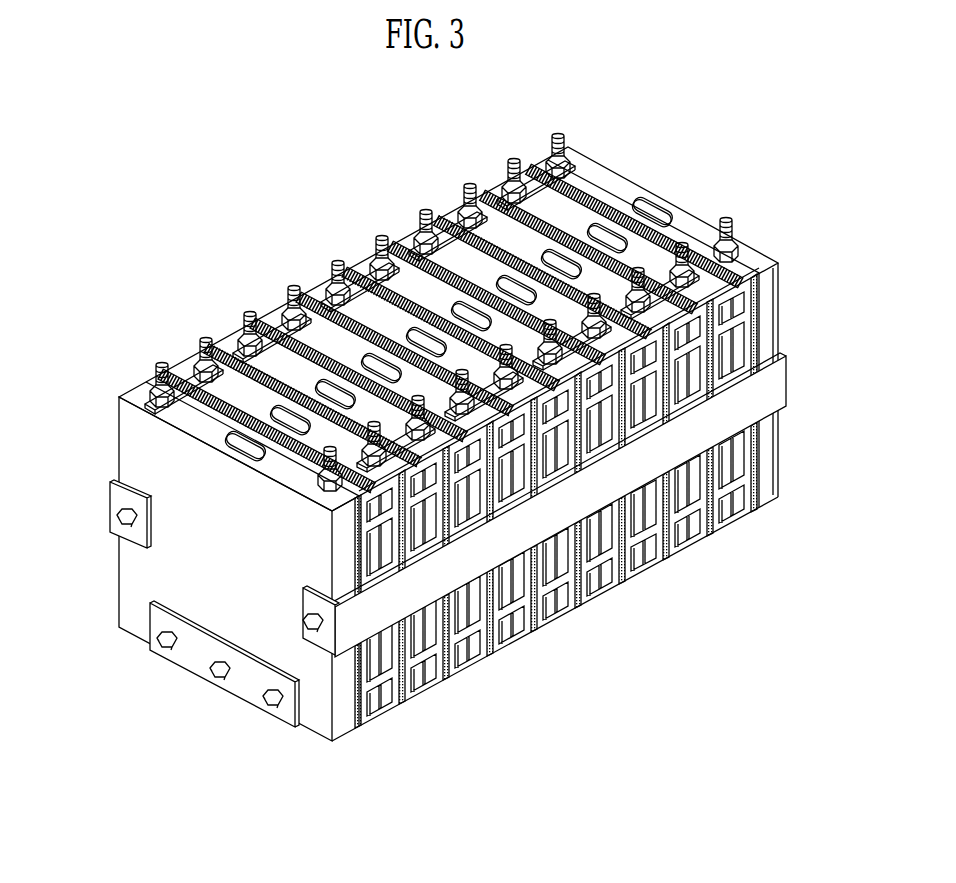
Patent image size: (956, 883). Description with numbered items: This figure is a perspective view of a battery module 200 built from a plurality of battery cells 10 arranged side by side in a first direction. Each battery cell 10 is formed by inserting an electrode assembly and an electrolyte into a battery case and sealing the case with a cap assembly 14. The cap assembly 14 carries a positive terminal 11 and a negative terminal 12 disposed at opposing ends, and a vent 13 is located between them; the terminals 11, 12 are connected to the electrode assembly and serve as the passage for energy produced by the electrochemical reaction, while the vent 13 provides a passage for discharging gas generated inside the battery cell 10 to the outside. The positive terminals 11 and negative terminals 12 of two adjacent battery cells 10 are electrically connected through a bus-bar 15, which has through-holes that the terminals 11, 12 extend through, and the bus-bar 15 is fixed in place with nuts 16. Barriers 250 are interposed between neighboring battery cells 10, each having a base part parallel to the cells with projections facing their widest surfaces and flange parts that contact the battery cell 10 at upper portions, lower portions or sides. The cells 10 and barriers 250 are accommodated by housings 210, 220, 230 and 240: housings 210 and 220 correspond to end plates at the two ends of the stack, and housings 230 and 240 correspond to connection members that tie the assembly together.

The battery cell 10 is at (768, 488).
The positive terminal 11 is at (560, 136).
The negative terminal 12 is at (728, 220).
The vent 13 is at (652, 210).
The cap assembly 14 is at (610, 188).
The bus-bar 15 is at (190, 370).
The nut 16 is at (248, 318).
The battery module 200 is at (212, 148).
The housing (end plate) 210 is at (142, 577).
The housing (end plate) 220 is at (756, 240).
The housing (connection member) 230 is at (108, 514).
The housing (connection member) 240 is at (196, 656).
The barrier 250 is at (540, 632).